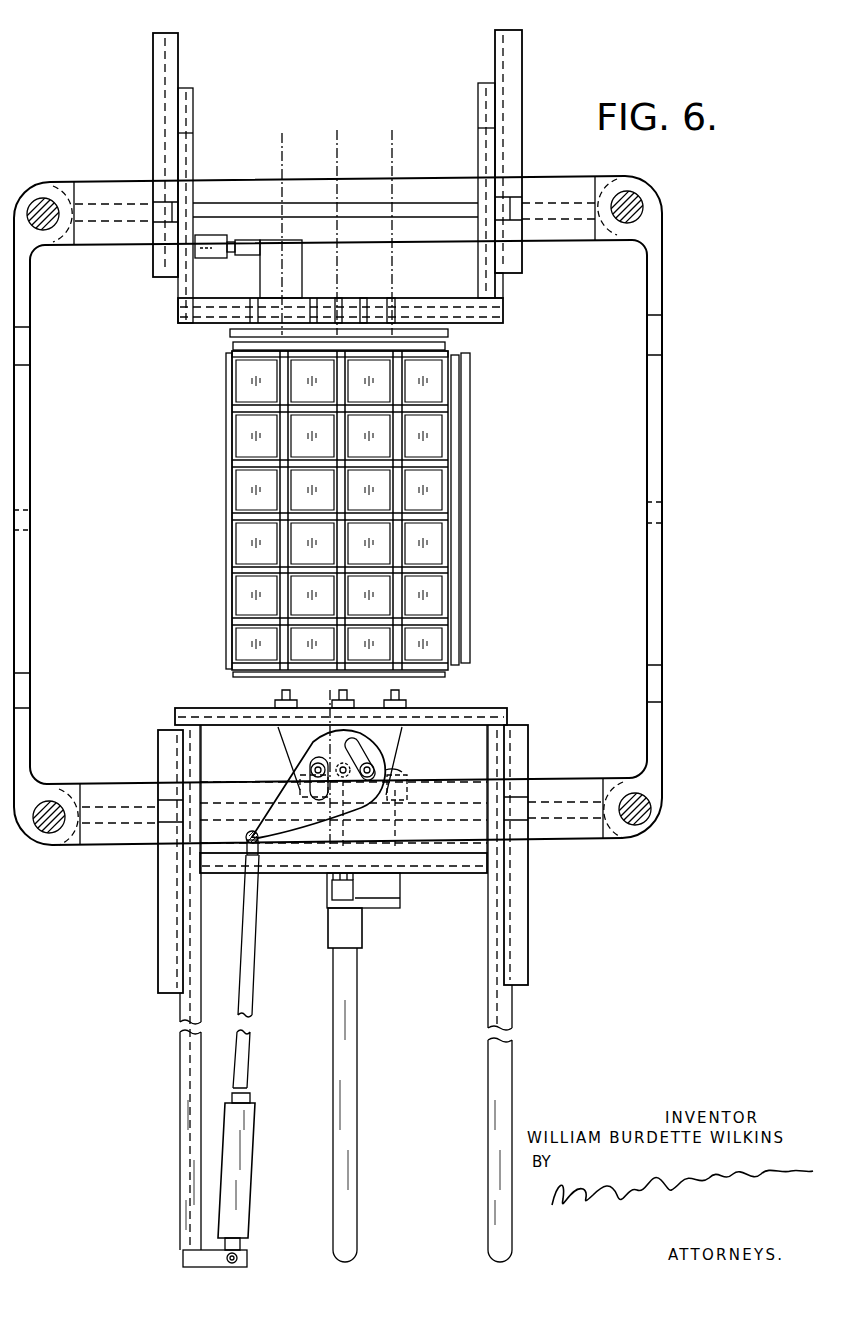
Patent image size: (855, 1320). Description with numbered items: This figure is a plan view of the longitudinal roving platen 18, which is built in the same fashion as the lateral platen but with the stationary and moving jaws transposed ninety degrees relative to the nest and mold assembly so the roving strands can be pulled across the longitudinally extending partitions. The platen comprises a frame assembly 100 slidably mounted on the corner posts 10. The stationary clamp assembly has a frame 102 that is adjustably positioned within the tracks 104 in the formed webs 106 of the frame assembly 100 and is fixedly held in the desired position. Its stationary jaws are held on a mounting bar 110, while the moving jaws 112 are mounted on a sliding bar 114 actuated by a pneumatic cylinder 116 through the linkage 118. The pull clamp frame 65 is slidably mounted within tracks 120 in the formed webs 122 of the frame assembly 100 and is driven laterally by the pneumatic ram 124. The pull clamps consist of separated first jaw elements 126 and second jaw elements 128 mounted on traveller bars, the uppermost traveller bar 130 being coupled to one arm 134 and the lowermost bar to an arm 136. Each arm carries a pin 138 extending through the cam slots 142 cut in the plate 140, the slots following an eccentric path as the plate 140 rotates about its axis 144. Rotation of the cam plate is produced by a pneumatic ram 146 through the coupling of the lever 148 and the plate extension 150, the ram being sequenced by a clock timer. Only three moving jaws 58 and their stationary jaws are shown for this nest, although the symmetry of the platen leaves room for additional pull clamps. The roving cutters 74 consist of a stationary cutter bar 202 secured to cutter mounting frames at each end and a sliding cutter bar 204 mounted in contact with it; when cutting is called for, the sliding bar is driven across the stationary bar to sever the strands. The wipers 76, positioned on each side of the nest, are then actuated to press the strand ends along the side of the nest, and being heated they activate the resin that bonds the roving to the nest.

The corner posts 10 is at (40, 206).
The longitudinal roving platen 18 is at (668, 223).
The moving jaws 58 is at (421, 692).
The pull clamp frame 65 is at (511, 1046).
The roving cutters 74 is at (455, 332).
The wipers 76 is at (230, 354).
The frame assembly 100 is at (663, 801).
The frame 102 is at (505, 298).
The tracks 104 is at (524, 276).
The formed webs 106 is at (521, 262).
The mounting bar 110 is at (338, 302).
The moving jaws 112 is at (352, 302).
The sliding bar 114 is at (393, 302).
The pneumatic cylinder 116 is at (205, 260).
The linkage 118 is at (298, 258).
The tracks 120 is at (503, 956).
The formed webs 122 is at (526, 895).
The pneumatic ram 124 is at (360, 937).
The first jaw elements 126 is at (418, 706).
The second jaw elements 128 is at (402, 740).
The traveller bar 130 is at (450, 730).
The arm 134 is at (400, 784).
The arm 136 is at (291, 746).
The pin 138 is at (400, 769).
The plate 140 is at (372, 800).
The cam slots 142 is at (370, 750).
The axis 144 is at (347, 805).
The pneumatic ram 146 is at (248, 1183).
The lever 148 is at (252, 1036).
The plate extension 150 is at (262, 822).
The stationary cutter bar 202 is at (460, 503).
The sliding cutter bar 204 is at (471, 458).